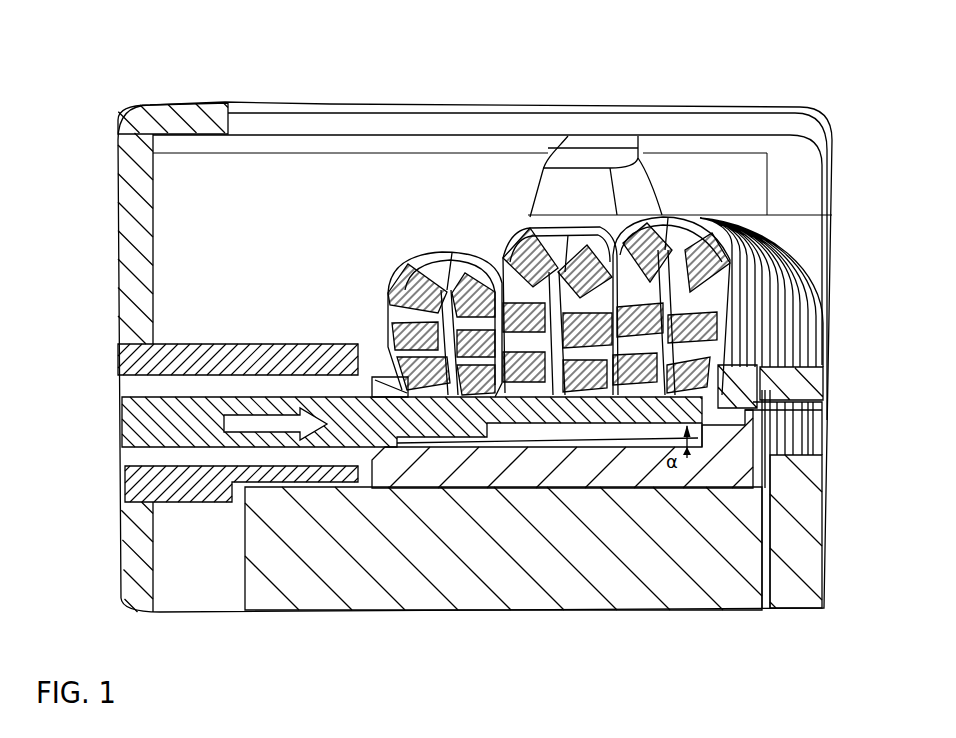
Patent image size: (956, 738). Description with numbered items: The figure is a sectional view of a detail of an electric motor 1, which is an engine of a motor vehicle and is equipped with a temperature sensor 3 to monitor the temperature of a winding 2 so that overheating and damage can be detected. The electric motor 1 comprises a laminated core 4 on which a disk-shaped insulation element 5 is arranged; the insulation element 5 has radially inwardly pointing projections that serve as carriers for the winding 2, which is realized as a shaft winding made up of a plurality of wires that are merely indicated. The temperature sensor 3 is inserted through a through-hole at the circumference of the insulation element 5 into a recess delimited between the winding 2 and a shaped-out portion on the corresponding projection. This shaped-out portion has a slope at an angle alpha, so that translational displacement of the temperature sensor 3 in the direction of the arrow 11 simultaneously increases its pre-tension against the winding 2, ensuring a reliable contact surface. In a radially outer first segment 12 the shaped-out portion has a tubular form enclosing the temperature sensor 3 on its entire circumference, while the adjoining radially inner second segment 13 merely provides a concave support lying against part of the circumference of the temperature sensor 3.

The electric motor 1 is at (305, 93).
The winding 2 is at (452, 246).
The temperature sensor 3 is at (143, 426).
The laminated core 4 is at (541, 590).
The insulation element 5 is at (716, 432).
The arrow 11 is at (275, 424).
The first segment 12 is at (470, 493).
The second segment 13 is at (695, 493).